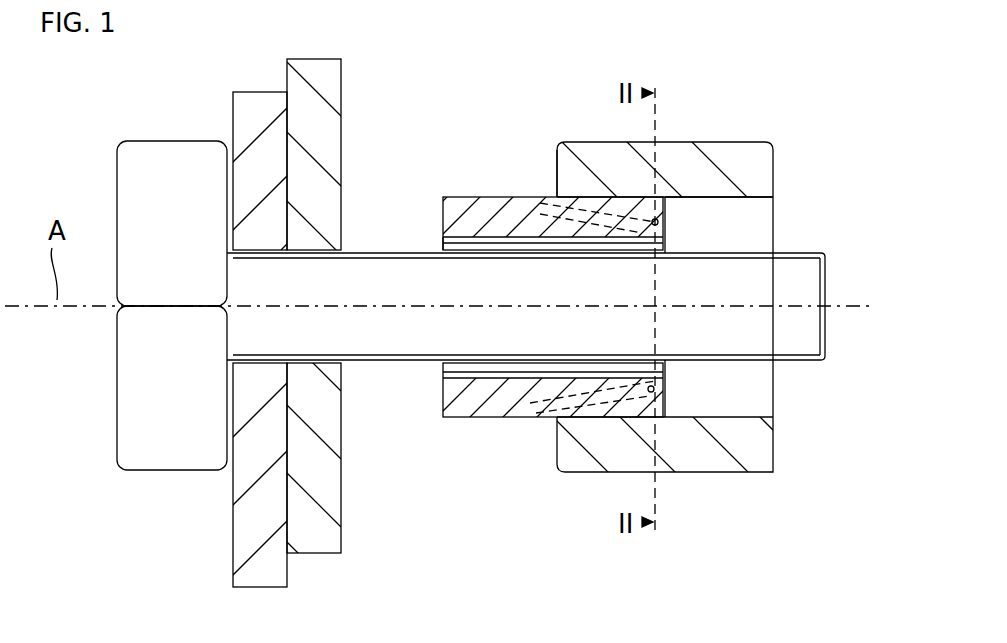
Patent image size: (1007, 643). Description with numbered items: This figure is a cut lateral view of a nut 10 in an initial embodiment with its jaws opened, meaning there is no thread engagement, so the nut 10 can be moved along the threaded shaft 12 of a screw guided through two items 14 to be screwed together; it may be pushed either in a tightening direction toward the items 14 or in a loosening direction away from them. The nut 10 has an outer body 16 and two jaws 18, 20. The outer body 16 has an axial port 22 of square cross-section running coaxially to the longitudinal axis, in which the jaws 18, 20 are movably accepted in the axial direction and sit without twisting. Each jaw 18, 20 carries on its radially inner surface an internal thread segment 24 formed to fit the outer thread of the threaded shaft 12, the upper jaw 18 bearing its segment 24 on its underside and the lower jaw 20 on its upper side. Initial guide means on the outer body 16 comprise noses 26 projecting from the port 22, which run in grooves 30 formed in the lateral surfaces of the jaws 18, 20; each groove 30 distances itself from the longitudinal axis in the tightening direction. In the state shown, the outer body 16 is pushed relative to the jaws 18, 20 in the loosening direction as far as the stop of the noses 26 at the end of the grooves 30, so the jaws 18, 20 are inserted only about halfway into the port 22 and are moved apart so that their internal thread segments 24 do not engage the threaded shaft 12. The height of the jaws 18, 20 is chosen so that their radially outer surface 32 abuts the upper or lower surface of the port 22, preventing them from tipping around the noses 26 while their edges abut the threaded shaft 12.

The nut 10 is at (757, 136).
The threaded shaft 12 is at (806, 364).
The items 14 is at (300, 58).
The outer body 16 is at (707, 142).
The upper jaw 18 is at (443, 197).
The lower jaw 20 is at (442, 402).
The axial port 22 is at (755, 201).
The internal thread segment 24 is at (442, 250).
The noses 26 is at (558, 173).
The grooves 30 is at (542, 197).
The radially outer surface 32 is at (508, 197).